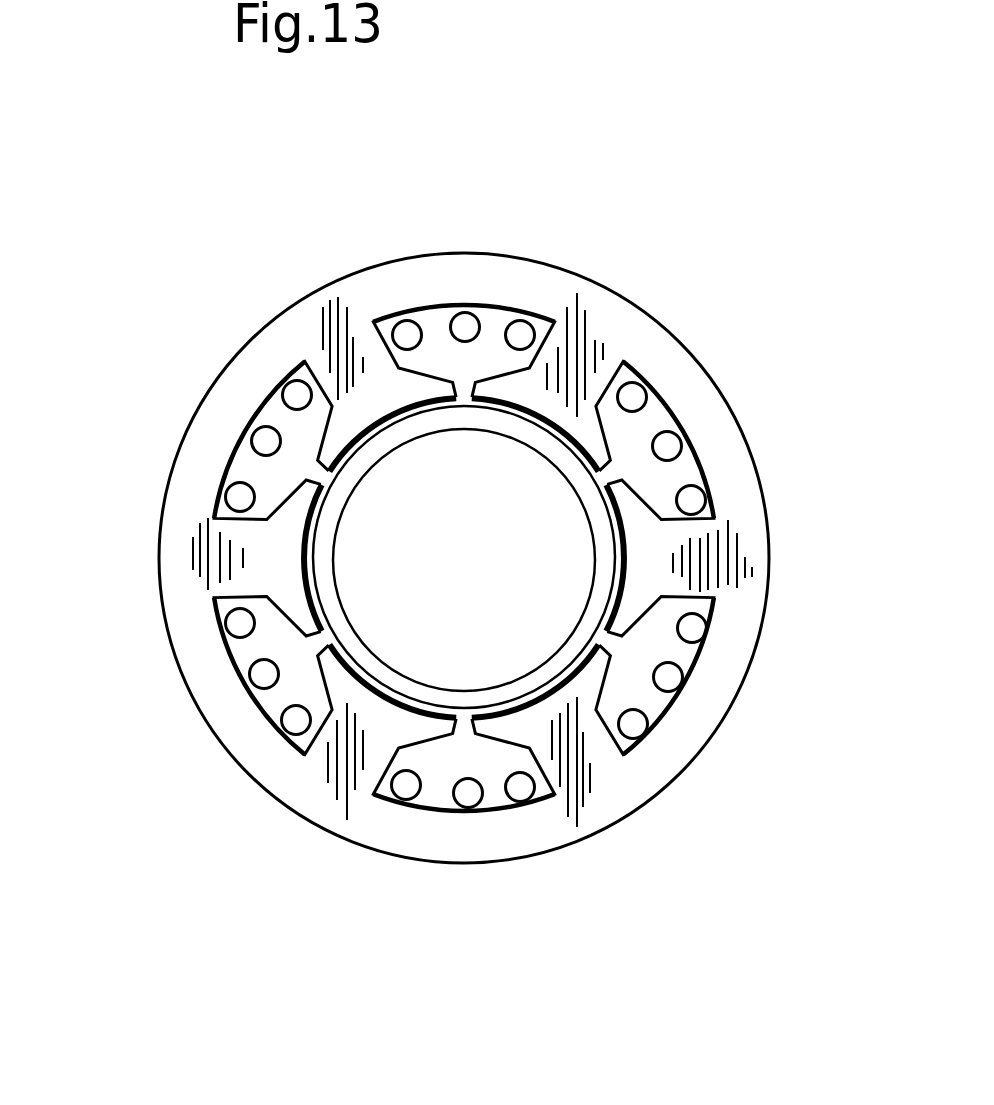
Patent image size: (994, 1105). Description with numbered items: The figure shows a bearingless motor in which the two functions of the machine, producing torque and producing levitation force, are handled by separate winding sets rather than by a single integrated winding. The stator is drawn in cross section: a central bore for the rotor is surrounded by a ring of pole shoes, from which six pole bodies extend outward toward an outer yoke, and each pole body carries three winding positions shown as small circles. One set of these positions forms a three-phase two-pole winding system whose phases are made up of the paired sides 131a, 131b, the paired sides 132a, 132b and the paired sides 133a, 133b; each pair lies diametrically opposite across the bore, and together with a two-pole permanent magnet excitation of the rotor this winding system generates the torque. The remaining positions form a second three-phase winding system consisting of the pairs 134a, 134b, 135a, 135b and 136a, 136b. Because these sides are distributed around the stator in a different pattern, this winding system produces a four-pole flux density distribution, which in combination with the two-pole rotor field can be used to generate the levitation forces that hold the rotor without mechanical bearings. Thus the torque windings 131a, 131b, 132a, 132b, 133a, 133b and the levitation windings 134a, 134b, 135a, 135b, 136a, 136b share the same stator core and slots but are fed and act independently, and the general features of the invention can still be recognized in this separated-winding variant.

The two-pole winding phase side 131a is at (465, 797).
The two-pole winding phase side 131b is at (463, 325).
The two-pole winding phase side 132a is at (668, 448).
The two-pole winding phase side 132b is at (262, 675).
The two-pole winding phase side 133a is at (257, 438).
The two-pole winding phase side 133b is at (670, 680).
The levitation winding phase side 134a is at (523, 790).
The levitation winding phase side 134b is at (297, 397).
The levitation winding phase side 135a is at (232, 497).
The levitation winding phase side 135b is at (232, 627).
The levitation winding phase side 136a is at (290, 723).
The levitation winding phase side 136b is at (397, 787).